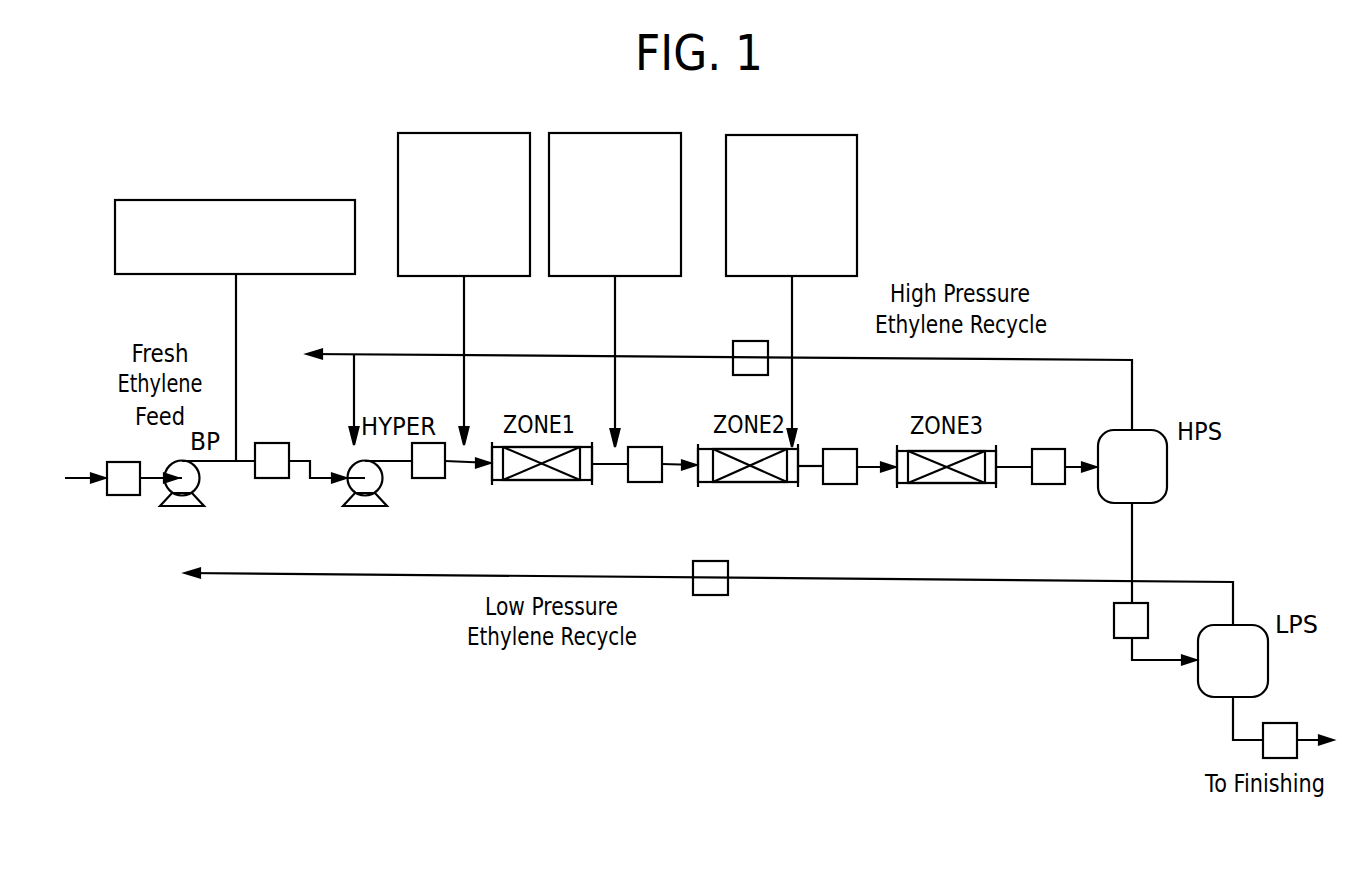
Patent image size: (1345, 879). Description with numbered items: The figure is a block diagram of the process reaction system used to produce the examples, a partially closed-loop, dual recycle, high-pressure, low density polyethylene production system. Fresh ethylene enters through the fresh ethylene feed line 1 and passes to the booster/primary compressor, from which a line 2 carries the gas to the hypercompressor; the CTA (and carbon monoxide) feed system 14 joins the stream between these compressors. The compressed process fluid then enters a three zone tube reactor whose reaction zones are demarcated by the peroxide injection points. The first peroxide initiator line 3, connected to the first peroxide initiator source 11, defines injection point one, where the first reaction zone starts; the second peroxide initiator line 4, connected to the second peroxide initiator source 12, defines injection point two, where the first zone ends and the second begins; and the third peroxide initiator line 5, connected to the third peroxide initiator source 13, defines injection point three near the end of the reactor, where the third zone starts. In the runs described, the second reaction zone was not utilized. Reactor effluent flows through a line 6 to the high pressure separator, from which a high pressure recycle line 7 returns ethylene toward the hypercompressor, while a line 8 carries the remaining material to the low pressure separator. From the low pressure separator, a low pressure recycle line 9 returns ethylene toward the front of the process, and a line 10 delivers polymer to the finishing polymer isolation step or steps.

The fresh ethylene feed line 1 is at (123, 478).
The line to the hypercompressor 2 is at (272, 460).
The first peroxide initiator line 3 is at (428, 460).
The second peroxide initiator line 4 is at (645, 464).
The third peroxide initiator line 5 is at (840, 466).
The line to the high pressure separator 6 is at (1048, 466).
The high pressure recycle line 7 is at (750, 358).
The line to the low pressure separator 8 is at (1131, 620).
The low pressure recycle line 9 is at (710, 578).
The line to the finishing polymer isolation step(s) 10 is at (1280, 740).
The first peroxide initiator source 11 is at (464, 289).
The second peroxide initiator source 12 is at (615, 290).
The third peroxide initiator source 13 is at (791, 291).
The CTA (and carbon monoxide) feed system 14 is at (235, 330).